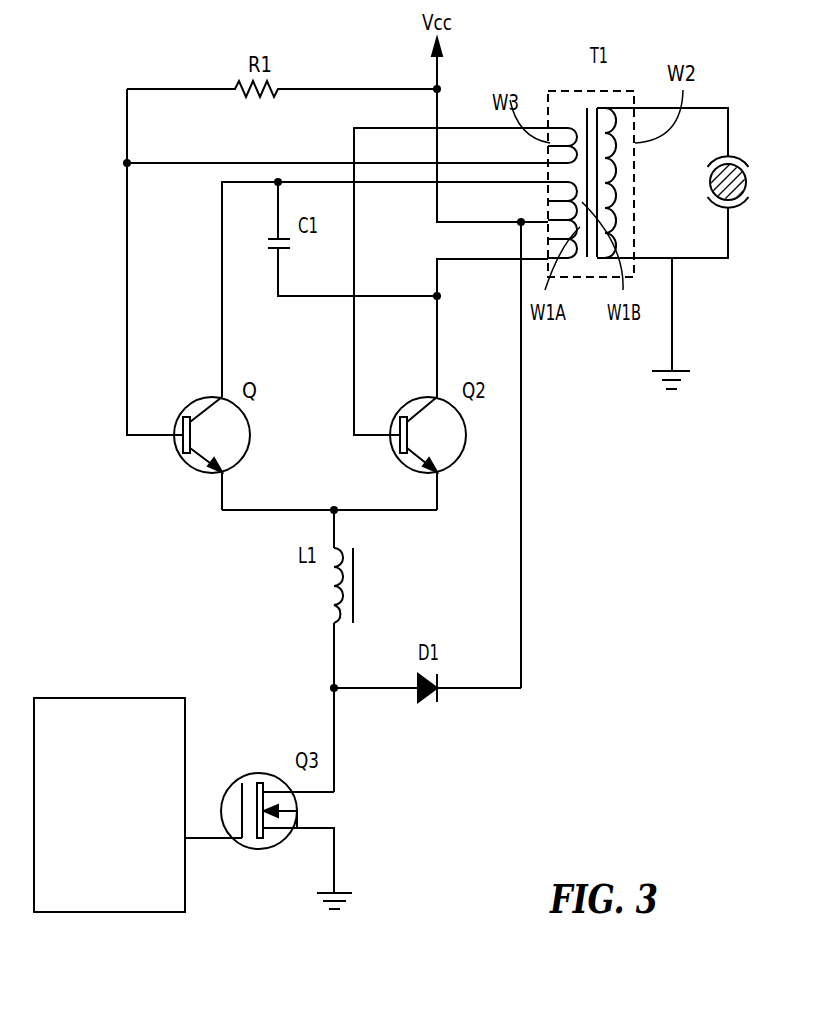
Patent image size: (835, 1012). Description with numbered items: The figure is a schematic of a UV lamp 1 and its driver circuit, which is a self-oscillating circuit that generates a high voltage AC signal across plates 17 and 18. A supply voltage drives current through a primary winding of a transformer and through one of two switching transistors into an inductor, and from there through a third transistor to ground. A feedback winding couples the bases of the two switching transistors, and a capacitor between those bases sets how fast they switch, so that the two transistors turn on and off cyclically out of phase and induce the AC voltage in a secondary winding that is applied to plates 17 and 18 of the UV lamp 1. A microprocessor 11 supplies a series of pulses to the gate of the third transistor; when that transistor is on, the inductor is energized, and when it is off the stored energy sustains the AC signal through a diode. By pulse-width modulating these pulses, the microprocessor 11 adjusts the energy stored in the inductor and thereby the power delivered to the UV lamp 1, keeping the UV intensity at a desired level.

The UV lamp 1 is at (749, 183).
The microprocessor 11 is at (82, 698).
The plate 17 is at (737, 150).
The plate 18 is at (737, 207).